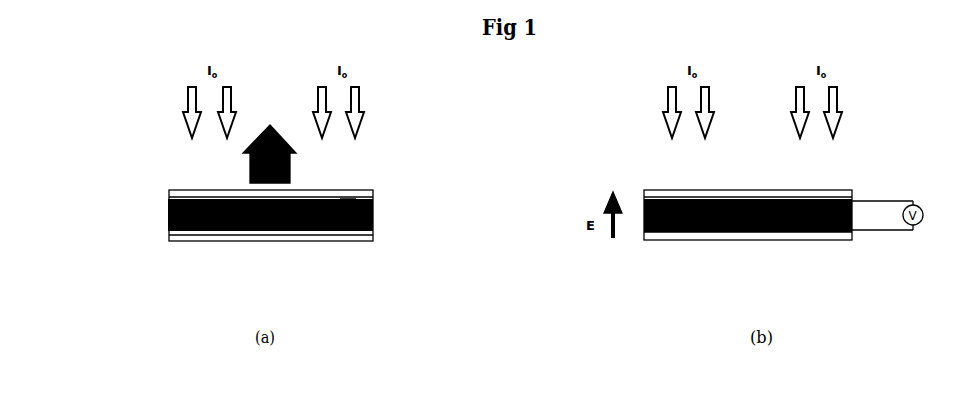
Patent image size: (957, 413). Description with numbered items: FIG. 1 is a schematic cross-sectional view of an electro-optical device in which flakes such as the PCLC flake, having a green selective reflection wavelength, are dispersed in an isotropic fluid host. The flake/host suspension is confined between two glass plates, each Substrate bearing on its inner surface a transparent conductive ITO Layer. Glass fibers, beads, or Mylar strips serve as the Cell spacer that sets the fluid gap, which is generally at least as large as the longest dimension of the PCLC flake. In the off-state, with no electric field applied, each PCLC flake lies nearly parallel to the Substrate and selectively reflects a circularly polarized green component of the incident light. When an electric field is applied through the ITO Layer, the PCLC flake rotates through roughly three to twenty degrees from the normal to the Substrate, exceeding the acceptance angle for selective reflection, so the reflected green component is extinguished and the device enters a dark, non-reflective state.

The ITO layer ITO Layer is at (168, 193).
The cell spacer Cell spacer is at (169, 213).
The substrate Substrate is at (183, 234).
The element PCLC flake is at (348, 198).